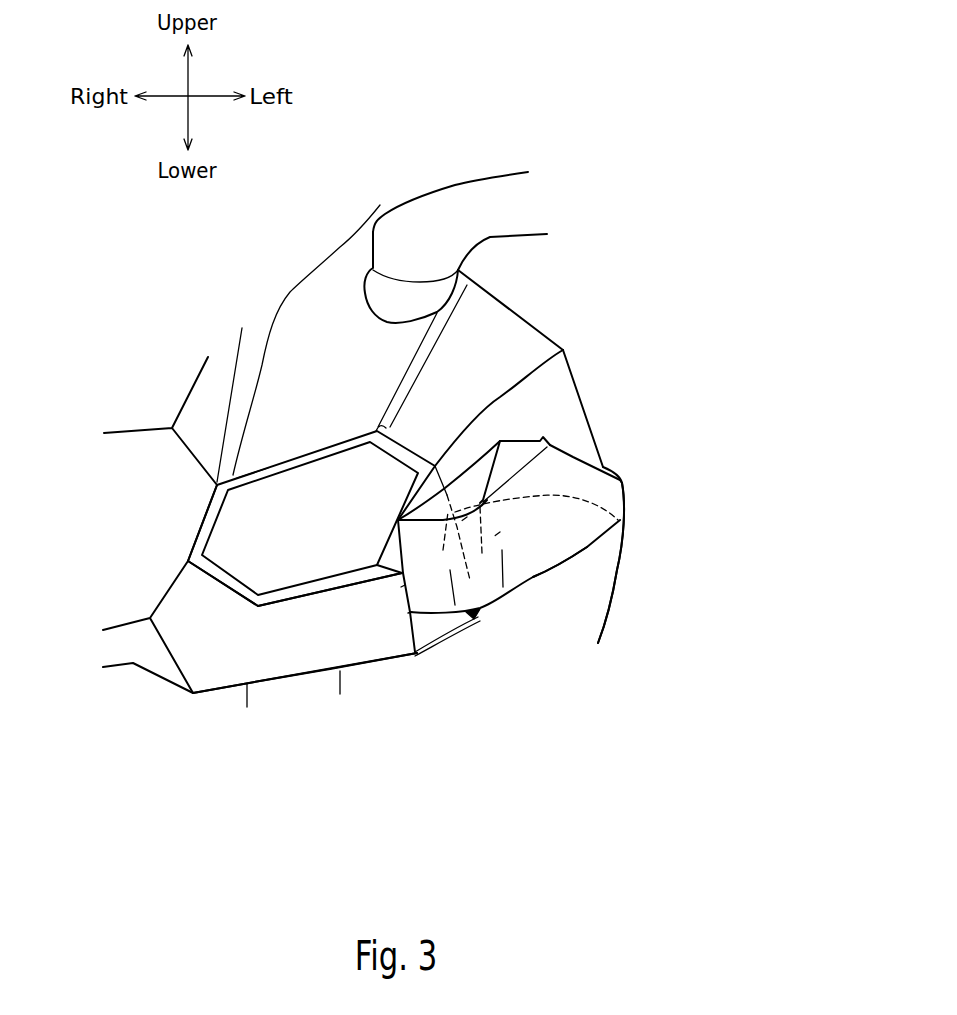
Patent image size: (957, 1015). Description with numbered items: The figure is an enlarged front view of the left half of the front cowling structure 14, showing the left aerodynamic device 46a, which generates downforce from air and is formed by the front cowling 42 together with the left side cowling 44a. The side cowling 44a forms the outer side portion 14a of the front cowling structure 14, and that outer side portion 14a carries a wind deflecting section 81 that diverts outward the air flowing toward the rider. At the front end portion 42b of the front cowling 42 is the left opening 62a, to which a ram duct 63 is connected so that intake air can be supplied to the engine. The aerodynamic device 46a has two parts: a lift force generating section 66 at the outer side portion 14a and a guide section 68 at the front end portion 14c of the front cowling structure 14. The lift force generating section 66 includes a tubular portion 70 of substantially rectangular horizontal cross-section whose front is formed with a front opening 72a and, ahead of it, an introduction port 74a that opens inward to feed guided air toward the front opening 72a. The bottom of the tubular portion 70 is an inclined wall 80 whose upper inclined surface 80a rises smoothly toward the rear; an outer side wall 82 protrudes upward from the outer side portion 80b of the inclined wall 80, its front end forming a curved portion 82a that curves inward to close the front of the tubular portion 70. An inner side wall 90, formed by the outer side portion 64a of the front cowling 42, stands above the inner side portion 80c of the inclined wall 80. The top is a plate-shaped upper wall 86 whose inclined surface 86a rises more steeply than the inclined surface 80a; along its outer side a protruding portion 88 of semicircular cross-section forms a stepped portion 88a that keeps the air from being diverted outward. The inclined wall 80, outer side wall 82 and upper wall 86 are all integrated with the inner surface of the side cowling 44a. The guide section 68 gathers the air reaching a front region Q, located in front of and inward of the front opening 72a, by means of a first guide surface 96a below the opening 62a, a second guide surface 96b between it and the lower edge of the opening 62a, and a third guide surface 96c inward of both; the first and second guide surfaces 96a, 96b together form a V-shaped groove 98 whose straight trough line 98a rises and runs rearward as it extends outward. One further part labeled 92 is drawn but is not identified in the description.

The front cowling structure 14 is at (163, 339).
The outer side portion 14a is at (600, 603).
The front end portion 14c is at (207, 515).
The front cowling 42 is at (160, 412).
The front end portion 42b is at (190, 547).
The left side cowling 44a is at (597, 623).
The left aerodynamic device 46a is at (644, 480).
The left opening 62a is at (268, 473).
The ram duct 63 is at (195, 614).
The outer side portion 64a is at (558, 430).
The lift force generating section 66 is at (583, 499).
The guide section 68 is at (328, 640).
The tubular portion 70 is at (620, 475).
The front opening 72a is at (480, 507).
The introduction port 74a is at (448, 512).
The inclined wall 80 is at (578, 578).
The inclined surface 80a is at (405, 585).
The outer side portion 80b is at (412, 612).
The inner side portion 80c is at (500, 532).
The wind deflecting section 81 is at (557, 643).
The outer side wall 82 is at (502, 550).
The curved portion 82a is at (450, 570).
The upper wall 86 is at (538, 445).
The inclined surface 86a is at (487, 472).
The protruding portion 88 is at (583, 448).
The stepped portion 88a is at (577, 432).
The inner side wall 90 is at (467, 517).
The right edge 92 is at (598, 442).
The first guide surface 96a is at (291, 602).
The second guide surface 96b is at (285, 601).
The third guide surface 96c is at (208, 658).
The V-shaped groove 98 is at (384, 613).
The trough line 98a is at (350, 600).
The front region Q is at (265, 545).